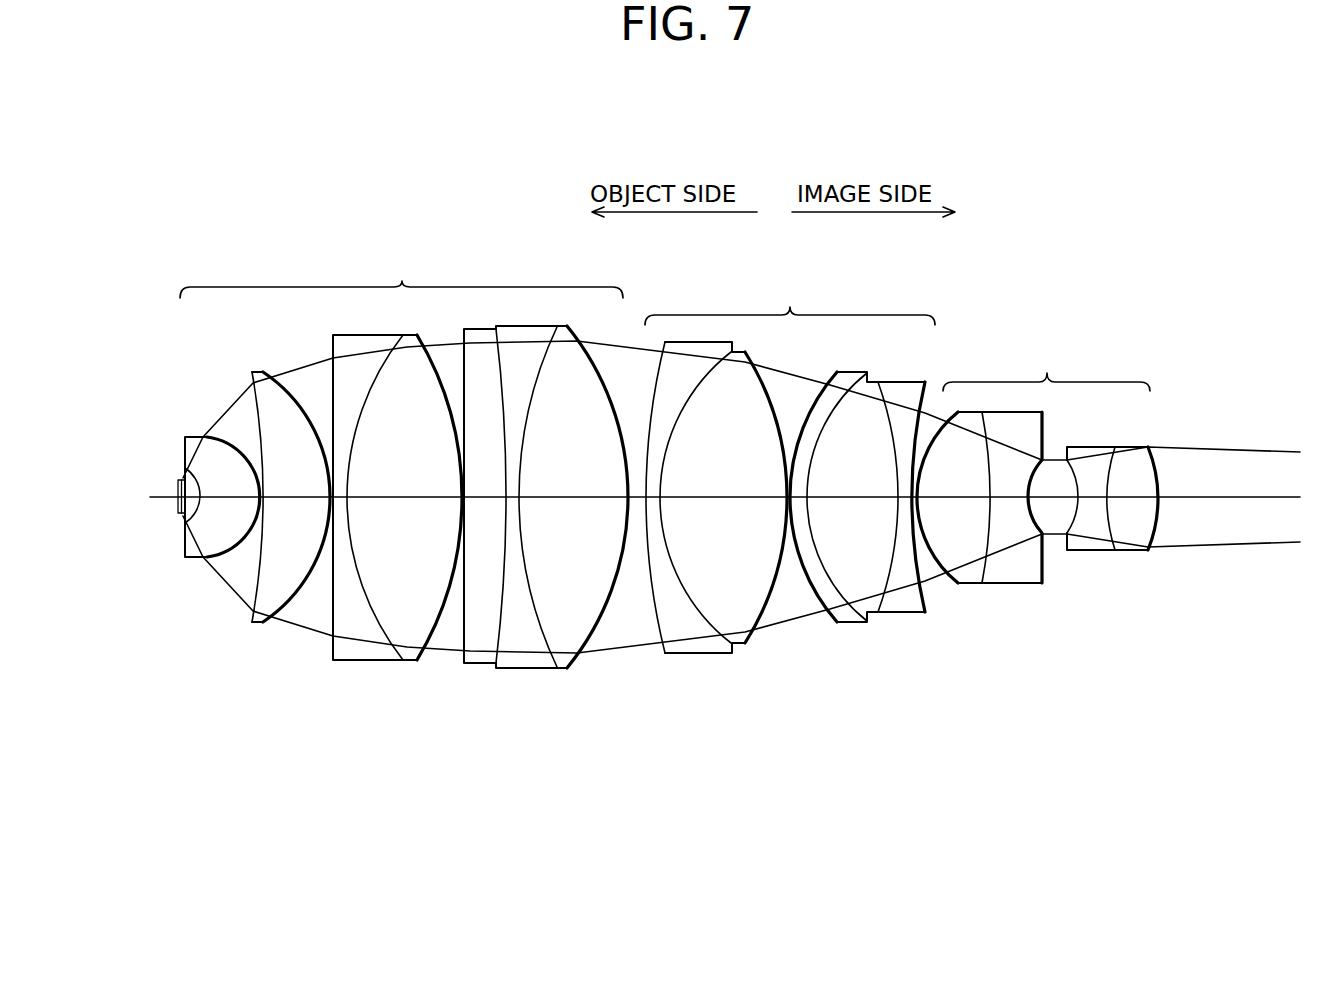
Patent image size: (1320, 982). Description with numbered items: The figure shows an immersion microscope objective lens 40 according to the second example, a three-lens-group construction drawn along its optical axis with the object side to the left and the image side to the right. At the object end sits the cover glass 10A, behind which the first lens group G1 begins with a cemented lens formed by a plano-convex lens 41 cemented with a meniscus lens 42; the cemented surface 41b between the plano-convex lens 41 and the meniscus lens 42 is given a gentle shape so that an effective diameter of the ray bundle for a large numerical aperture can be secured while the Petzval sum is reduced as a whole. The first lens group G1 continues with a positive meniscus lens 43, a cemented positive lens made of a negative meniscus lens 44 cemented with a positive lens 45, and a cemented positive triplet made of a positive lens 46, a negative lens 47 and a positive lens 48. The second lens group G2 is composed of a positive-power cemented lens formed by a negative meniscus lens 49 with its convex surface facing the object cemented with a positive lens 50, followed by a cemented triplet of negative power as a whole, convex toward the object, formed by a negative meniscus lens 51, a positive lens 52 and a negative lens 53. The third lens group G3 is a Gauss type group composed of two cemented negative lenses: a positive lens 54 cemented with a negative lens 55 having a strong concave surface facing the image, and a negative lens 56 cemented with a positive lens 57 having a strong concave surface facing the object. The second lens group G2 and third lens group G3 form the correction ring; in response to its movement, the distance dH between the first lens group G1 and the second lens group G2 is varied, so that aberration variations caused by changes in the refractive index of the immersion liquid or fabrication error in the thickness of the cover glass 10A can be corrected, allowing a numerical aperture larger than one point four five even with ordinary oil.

The immersion microscope objective lens 40 is at (233, 162).
The cover glass 10A is at (180, 516).
The plano-convex lens 41 is at (185, 553).
The cemented surface 41b is at (205, 466).
The meniscus lens 42 is at (223, 543).
The positive meniscus lens 43 is at (260, 613).
The negative meniscus lens 44 is at (357, 653).
The positive lens 45 is at (413, 657).
The positive lens 46 is at (477, 664).
The negative lens 47 is at (525, 658).
The positive lens 48 is at (567, 672).
The negative meniscus lens 49 is at (697, 648).
The positive lens 50 is at (738, 644).
The negative meniscus lens 51 is at (848, 614).
The positive lens 52 is at (873, 606).
The negative lens 53 is at (907, 606).
The positive lens 54 is at (975, 575).
The negative lens 55 is at (1018, 576).
The negative lens 56 is at (1092, 545).
The positive lens 57 is at (1130, 547).
The distance between the first lens group and the second lens group dH is at (640, 520).
The first lens group G1 is at (401, 273).
The second lens group G2 is at (790, 297).
The third lens group G3 is at (1046, 364).